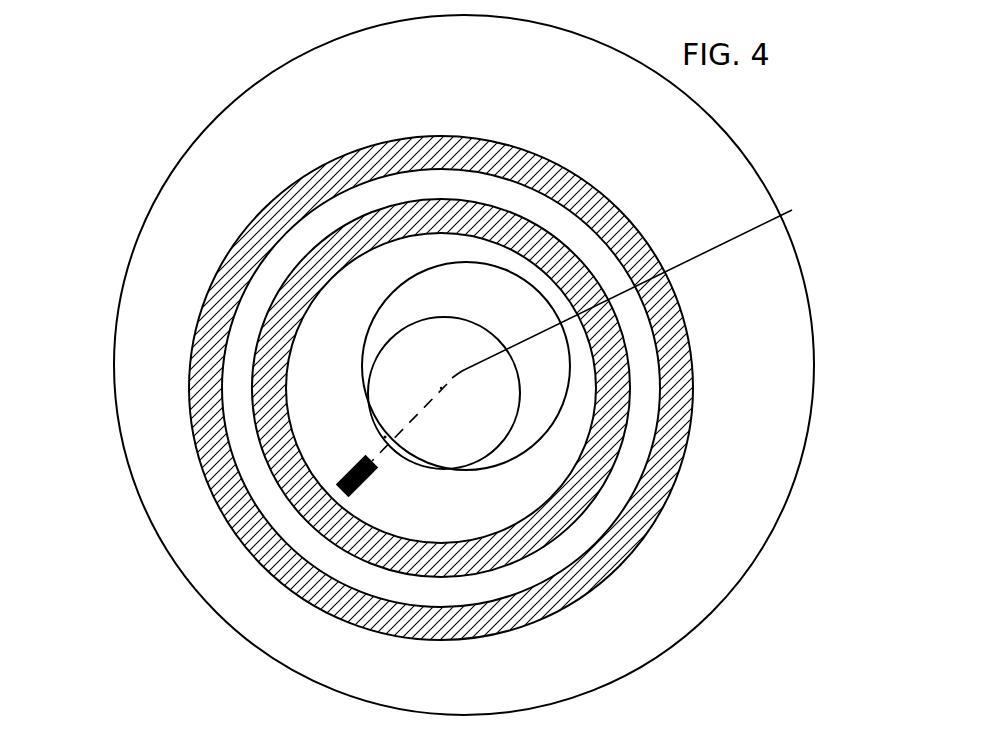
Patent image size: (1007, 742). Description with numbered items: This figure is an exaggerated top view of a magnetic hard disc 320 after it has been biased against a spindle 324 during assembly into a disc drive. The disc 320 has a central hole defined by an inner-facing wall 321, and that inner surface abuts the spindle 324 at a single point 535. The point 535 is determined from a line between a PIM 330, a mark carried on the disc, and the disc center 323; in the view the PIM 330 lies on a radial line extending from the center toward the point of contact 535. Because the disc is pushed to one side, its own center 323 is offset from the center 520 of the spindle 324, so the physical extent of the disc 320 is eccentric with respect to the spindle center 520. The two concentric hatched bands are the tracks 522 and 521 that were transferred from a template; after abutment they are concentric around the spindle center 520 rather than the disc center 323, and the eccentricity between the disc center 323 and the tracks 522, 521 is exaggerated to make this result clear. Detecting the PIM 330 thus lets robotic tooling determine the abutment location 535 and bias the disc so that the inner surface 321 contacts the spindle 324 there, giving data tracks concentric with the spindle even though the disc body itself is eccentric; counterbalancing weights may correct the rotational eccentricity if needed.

The disc 320 is at (259, 62).
The wall 321 is at (467, 262).
The center of disc 323 is at (792, 210).
The spindle 324 is at (425, 322).
The PIM 330 is at (340, 485).
The center of spindle 520 is at (422, 384).
The track 521 is at (313, 528).
The track 522 is at (258, 557).
The point 535 is at (385, 437).